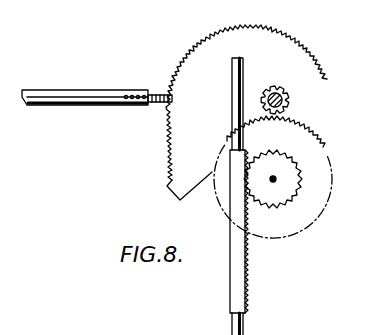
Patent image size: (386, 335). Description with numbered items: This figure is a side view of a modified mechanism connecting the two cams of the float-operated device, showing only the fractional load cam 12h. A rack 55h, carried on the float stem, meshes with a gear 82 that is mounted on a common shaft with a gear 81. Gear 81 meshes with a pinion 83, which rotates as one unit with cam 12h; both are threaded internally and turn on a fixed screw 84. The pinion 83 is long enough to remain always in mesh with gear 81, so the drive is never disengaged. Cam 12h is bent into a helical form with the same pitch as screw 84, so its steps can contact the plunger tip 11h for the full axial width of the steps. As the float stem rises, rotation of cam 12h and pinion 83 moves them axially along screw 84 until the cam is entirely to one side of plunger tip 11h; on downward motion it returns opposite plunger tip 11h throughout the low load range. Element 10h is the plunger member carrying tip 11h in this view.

The bar 10h is at (73, 90).
The plunger tip 11h is at (156, 92).
The fractional load cam 12h is at (313, 71).
The rack 55h is at (246, 276).
The gear 81 is at (330, 172).
The gear 82 is at (283, 196).
The pinion 83 is at (289, 100).
The fixed screw 84 is at (267, 92).